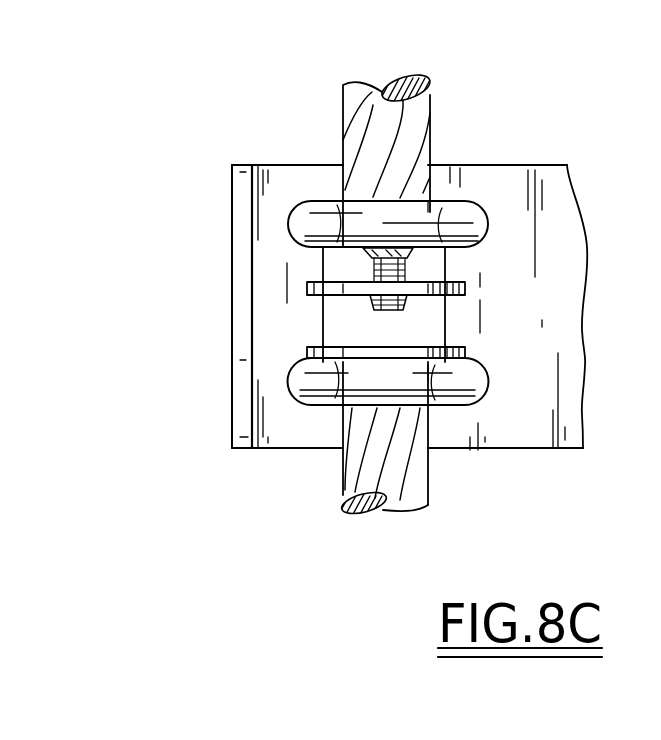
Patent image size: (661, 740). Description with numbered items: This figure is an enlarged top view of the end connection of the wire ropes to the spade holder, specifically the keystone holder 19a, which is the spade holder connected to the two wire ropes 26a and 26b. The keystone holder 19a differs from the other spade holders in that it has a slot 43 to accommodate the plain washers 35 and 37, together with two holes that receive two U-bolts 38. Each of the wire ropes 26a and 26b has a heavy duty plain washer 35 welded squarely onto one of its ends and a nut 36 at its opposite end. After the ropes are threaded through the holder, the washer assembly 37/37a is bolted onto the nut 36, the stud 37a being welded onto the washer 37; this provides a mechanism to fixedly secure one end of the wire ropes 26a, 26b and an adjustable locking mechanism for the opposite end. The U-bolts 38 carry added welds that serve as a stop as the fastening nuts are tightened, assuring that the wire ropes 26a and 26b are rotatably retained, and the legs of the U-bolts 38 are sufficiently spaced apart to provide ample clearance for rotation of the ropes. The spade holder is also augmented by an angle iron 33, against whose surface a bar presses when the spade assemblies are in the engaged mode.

The keystone holder 19a is at (583, 367).
The angle iron 33 is at (233, 339).
The wire rope 26a is at (345, 133).
The wire rope 26b is at (424, 473).
The U-bolts 38 is at (487, 181).
The nut 36 is at (414, 253).
The washer 37 is at (482, 293).
The stud 37a is at (387, 312).
The slot 43 is at (347, 328).
The heavy duty plain washer 35 is at (468, 350).